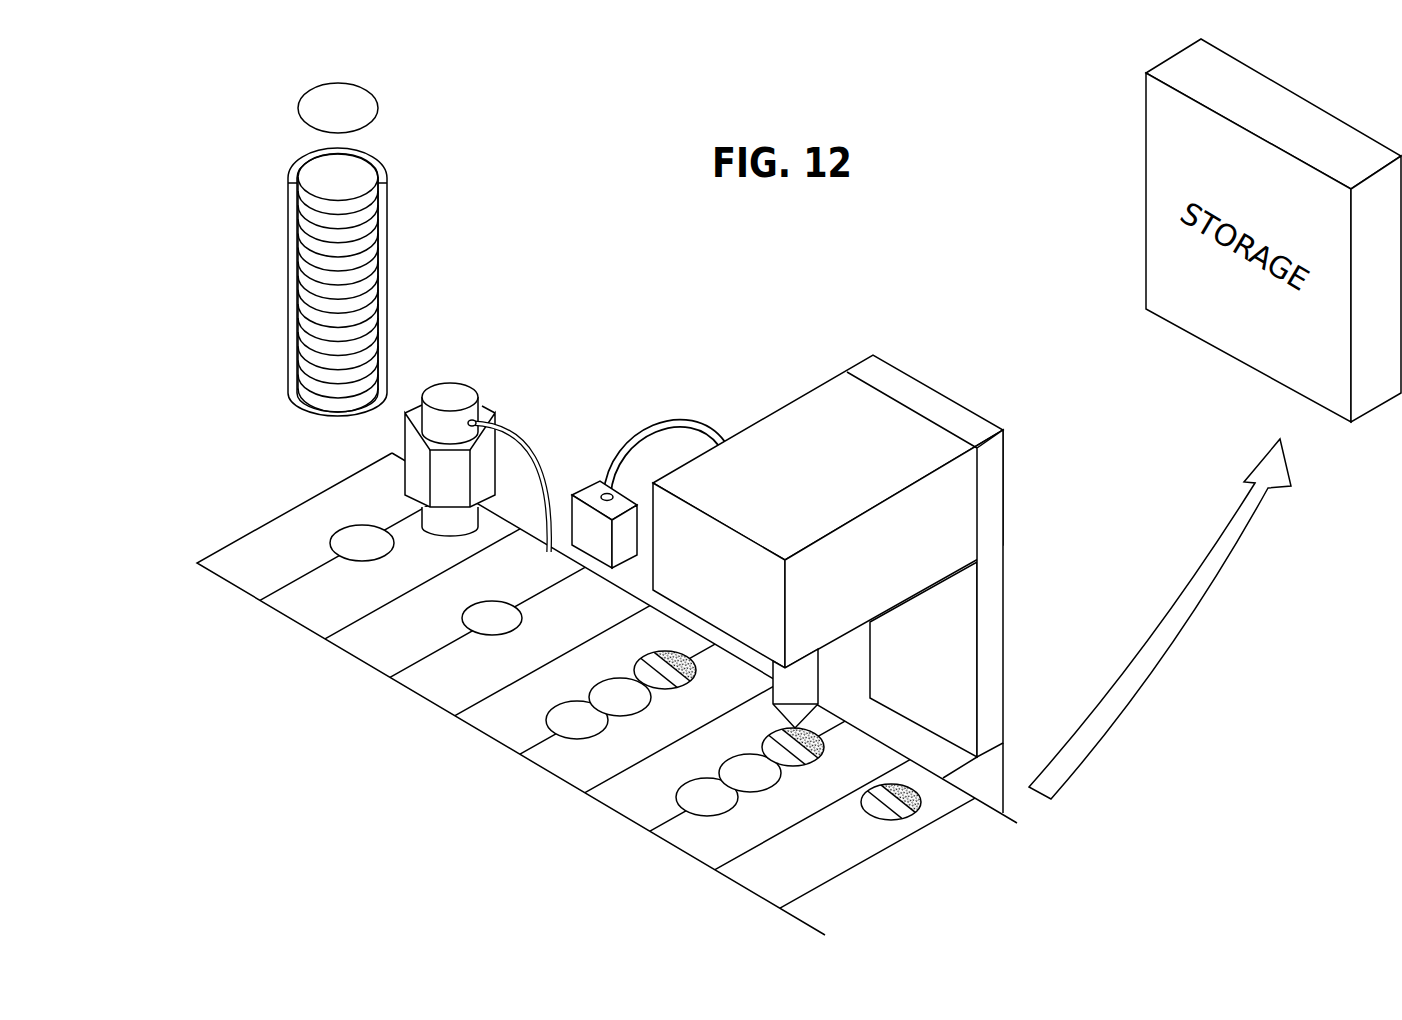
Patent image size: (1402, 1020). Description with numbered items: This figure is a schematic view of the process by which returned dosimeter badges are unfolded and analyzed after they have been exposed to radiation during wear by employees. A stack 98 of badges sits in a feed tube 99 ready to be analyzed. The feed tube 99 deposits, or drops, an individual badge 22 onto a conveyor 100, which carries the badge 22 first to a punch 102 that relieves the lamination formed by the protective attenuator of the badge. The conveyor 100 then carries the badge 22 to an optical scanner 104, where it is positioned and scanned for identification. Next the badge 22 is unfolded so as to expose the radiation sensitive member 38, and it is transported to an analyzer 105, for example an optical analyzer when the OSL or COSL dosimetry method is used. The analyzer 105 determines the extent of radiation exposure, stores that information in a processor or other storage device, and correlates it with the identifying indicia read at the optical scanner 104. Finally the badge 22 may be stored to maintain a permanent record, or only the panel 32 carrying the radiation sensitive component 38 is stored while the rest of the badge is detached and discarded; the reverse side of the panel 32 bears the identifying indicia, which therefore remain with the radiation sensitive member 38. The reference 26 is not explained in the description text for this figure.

The badge 22 is at (458, 694).
The disc lower surface 26 is at (353, 560).
The panel 32 is at (663, 678).
The radiation sensitive member 38 is at (768, 764).
The stack 98 is at (372, 172).
The feed tube 99 is at (288, 302).
The conveyor 100 is at (215, 575).
The punch 102 is at (450, 395).
The optical scanner 104 is at (621, 522).
The analyzer 105 is at (932, 533).